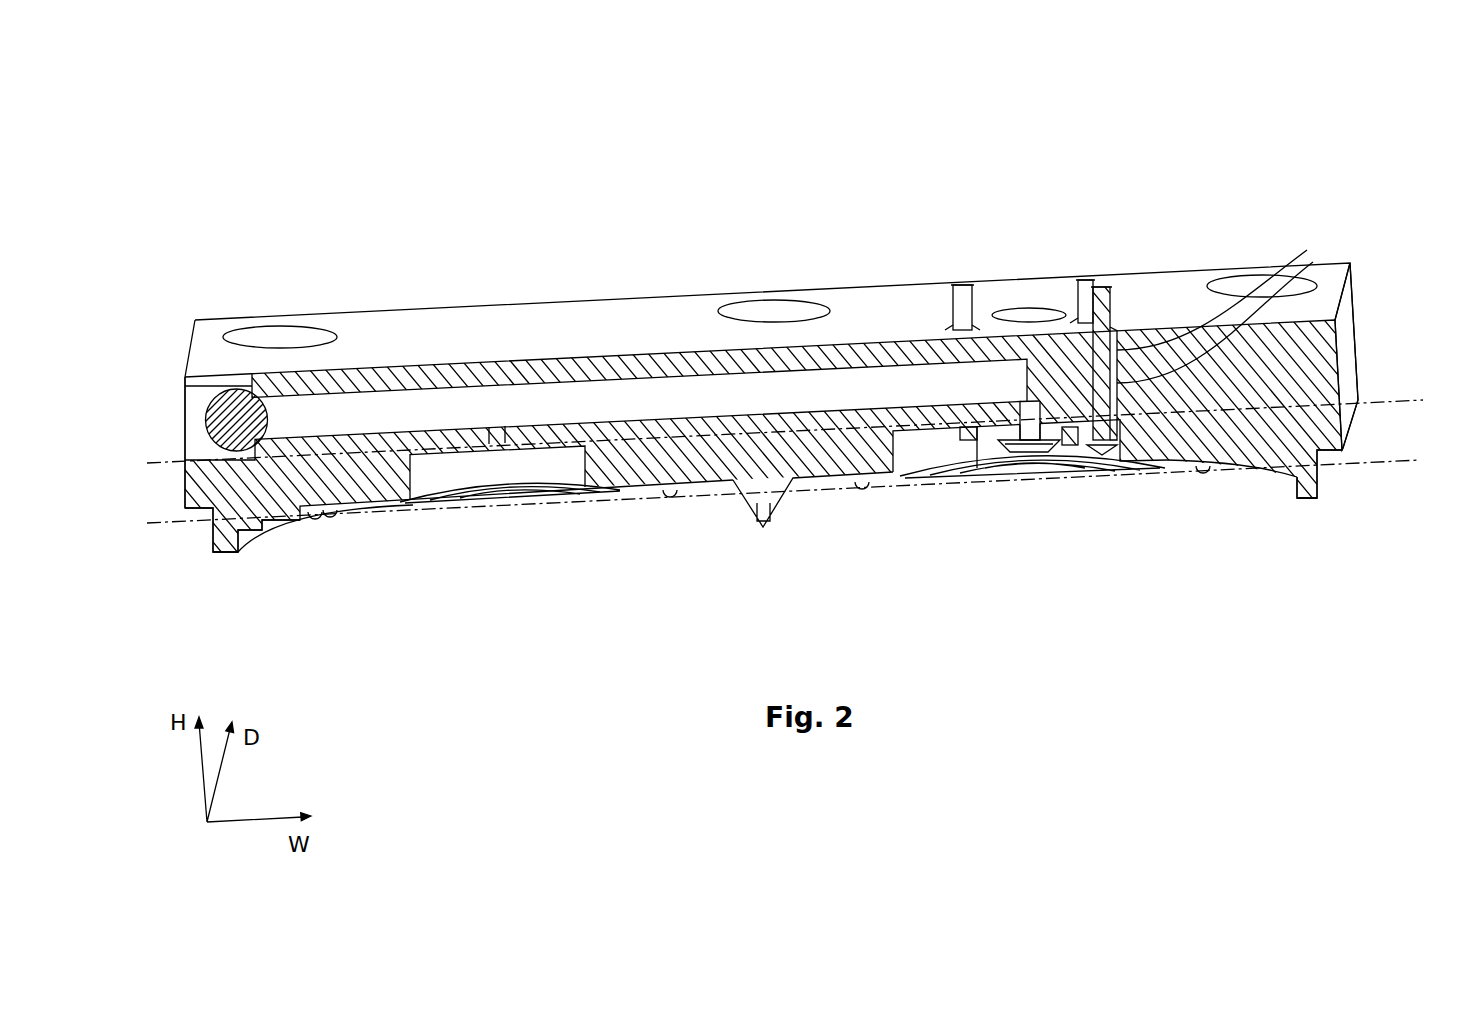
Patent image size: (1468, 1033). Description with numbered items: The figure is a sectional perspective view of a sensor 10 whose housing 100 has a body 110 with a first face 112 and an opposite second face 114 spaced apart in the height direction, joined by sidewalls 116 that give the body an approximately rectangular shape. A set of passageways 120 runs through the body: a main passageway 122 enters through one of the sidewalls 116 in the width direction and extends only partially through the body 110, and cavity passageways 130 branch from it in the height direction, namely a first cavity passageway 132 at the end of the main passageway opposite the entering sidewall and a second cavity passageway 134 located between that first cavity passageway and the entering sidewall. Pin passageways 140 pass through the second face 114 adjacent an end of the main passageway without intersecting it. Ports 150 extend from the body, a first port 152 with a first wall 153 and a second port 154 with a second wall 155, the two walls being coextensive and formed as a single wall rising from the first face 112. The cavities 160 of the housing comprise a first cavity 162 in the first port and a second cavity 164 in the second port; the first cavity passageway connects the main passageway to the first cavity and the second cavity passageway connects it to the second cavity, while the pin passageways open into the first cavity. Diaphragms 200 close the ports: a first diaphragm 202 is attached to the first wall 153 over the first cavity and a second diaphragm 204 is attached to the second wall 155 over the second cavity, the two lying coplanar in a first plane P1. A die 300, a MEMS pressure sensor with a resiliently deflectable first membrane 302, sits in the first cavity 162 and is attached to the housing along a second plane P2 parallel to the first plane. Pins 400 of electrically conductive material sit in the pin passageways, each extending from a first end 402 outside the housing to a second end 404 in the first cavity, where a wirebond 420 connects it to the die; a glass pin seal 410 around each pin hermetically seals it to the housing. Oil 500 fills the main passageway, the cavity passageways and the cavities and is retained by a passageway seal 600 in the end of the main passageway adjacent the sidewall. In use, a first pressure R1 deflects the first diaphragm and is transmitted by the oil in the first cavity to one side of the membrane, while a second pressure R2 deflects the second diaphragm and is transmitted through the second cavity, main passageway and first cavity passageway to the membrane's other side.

The sensor 10 is at (250, 82).
The housing 100 is at (178, 330).
The body 110 is at (1366, 331).
The first face 112 is at (192, 513).
The second face 114 is at (407, 317).
The sidewalls 116 is at (185, 480).
The passageways 120 is at (770, 328).
The main passageway 122 is at (500, 388).
The cavity passageways 130 is at (451, 333).
The first cavity passageway 132 is at (1038, 395).
The second cavity passageway 134 is at (496, 432).
The pin passageways 140 is at (943, 320).
The ports 150 is at (231, 568).
The first port 152 is at (1293, 521).
The first wall 153 is at (1320, 498).
The second port 154 is at (243, 558).
The second wall 155 is at (240, 547).
The cavities 160 is at (759, 516).
The first cavity 162 is at (900, 479).
The second cavity 164 is at (425, 481).
The diaphragms 200 is at (510, 534).
The first diaphragm 202 is at (923, 487).
The second diaphragm 204 is at (443, 505).
The die 300 is at (987, 480).
The first membrane 302 is at (1055, 470).
The pins 400 is at (960, 305).
The first end 402 is at (963, 283).
The second end 404 is at (983, 478).
The pin seal 410 is at (1290, 262).
The wirebond 420 is at (1087, 490).
The oil 500 is at (684, 409).
The passageway seal 600 is at (208, 418).
The first pressure R1 is at (1034, 497).
The second pressure R2 is at (502, 522).
The first plane P1 is at (800, 486).
The second plane P2 is at (800, 426).